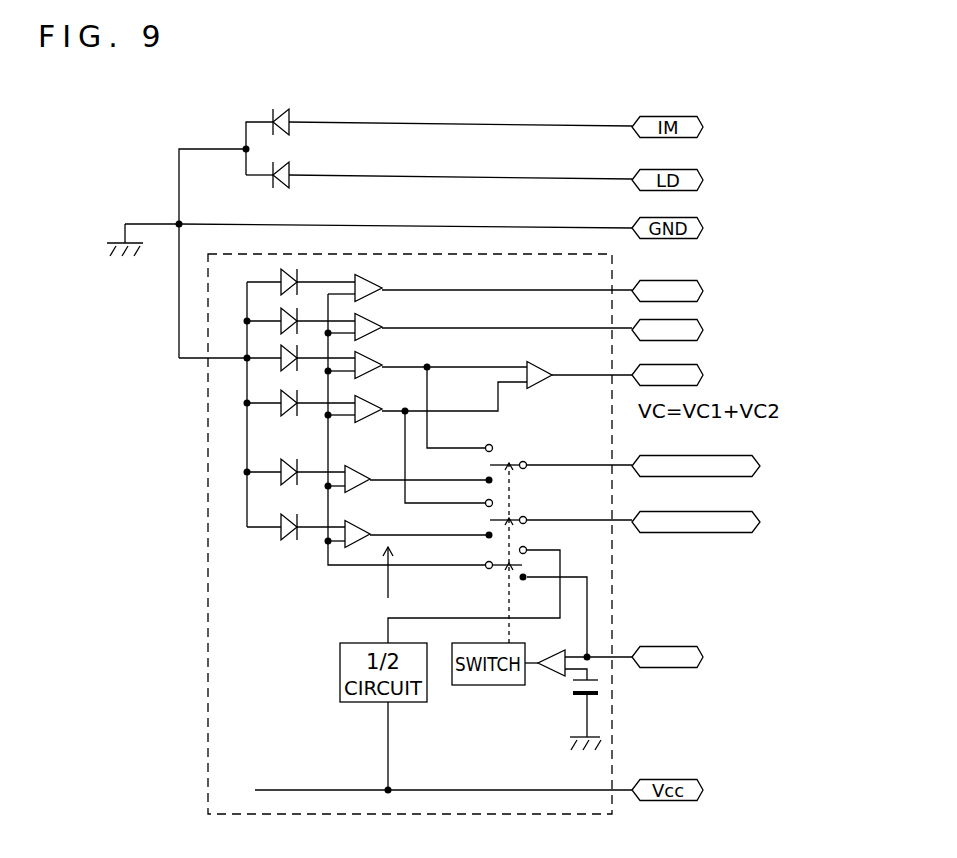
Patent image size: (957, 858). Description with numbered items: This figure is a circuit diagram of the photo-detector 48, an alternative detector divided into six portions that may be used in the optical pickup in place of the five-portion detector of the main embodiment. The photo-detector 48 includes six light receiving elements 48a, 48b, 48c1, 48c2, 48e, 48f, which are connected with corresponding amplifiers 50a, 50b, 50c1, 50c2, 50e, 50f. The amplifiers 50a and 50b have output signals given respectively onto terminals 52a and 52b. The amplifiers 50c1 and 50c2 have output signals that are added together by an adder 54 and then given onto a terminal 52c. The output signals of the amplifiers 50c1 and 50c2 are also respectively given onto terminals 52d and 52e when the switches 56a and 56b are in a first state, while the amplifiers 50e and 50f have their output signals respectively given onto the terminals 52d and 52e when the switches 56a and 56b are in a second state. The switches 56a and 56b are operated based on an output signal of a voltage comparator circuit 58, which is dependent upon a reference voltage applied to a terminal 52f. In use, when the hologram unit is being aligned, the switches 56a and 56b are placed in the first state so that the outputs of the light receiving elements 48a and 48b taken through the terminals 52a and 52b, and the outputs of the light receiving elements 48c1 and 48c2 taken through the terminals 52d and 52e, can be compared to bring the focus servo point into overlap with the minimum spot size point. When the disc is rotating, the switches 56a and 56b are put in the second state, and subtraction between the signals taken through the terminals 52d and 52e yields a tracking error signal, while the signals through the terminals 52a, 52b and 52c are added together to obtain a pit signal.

The photo-detector 48 is at (157, 138).
The light receiving element 48a is at (281, 276).
The light receiving element 48b is at (281, 313).
The light receiving element 48c1 is at (281, 365).
The light receiving element 48c2 is at (281, 408).
The light receiving element 48e is at (281, 463).
The light receiving element 48f is at (281, 530).
The amplifier 50a is at (372, 278).
The amplifier 50b is at (372, 318).
The amplifier 50c1 is at (372, 358).
The amplifier 50c2 is at (383, 397).
The amplifier 50e is at (358, 474).
The amplifier 50f is at (370, 526).
The terminal 52a is at (695, 286).
The terminal 52b is at (695, 326).
The terminal 52c is at (695, 371).
The terminal 52d is at (757, 461).
The terminal 52e is at (757, 516).
The terminal 52f is at (695, 652).
The adder 54 is at (537, 363).
The switch 56a is at (513, 447).
The switch 56b is at (522, 507).
The voltage comparator circuit 58 is at (547, 688).